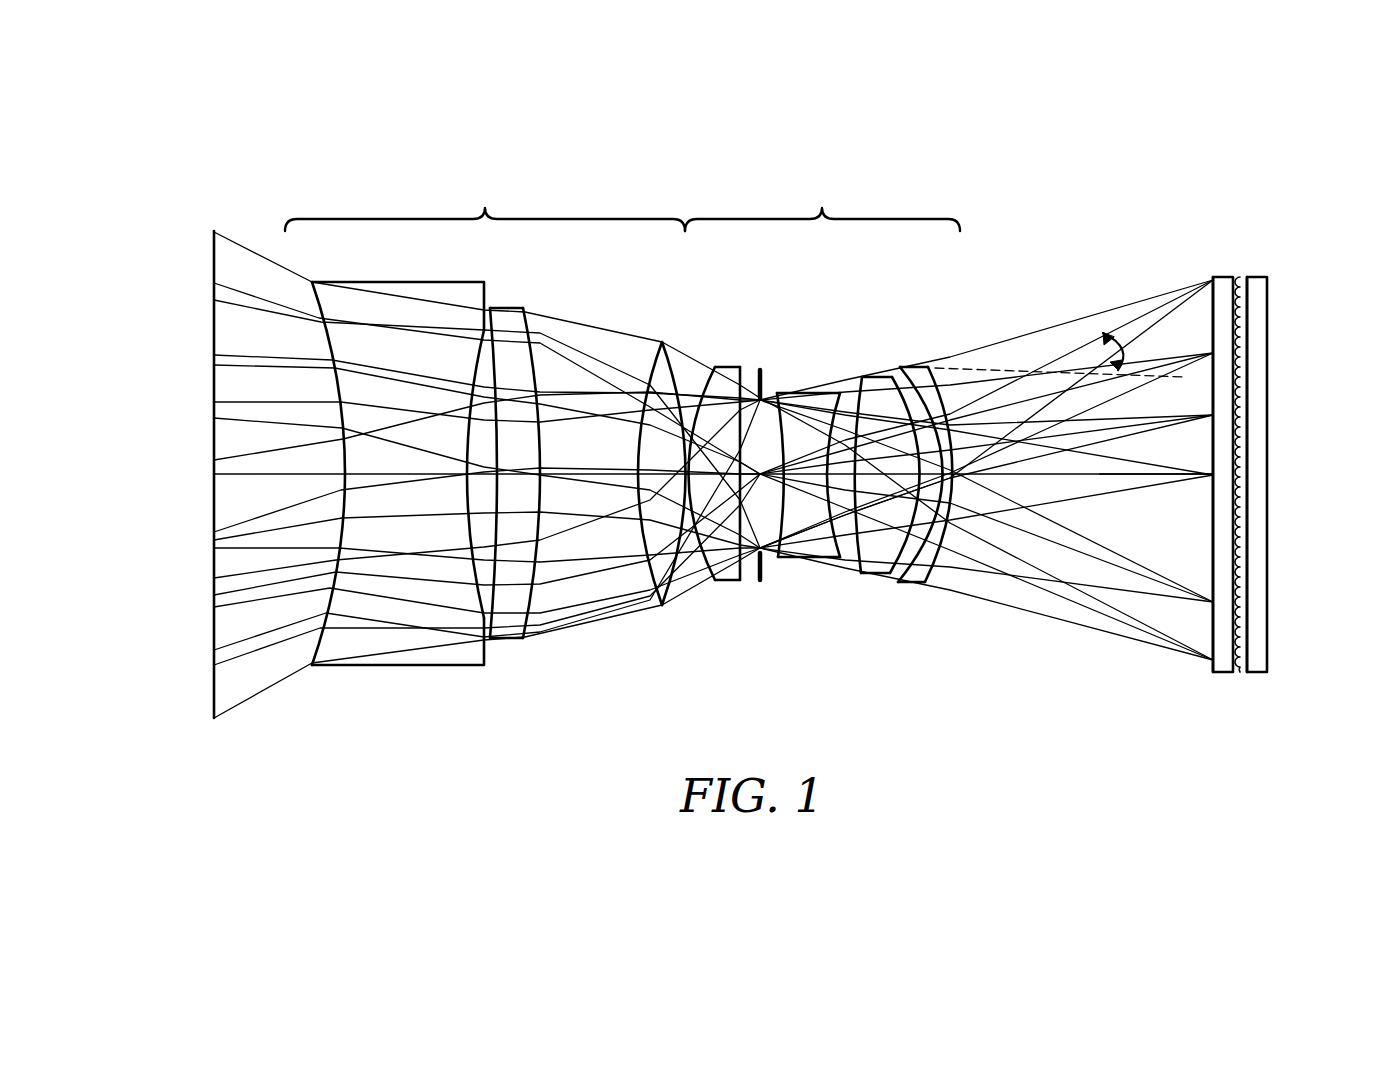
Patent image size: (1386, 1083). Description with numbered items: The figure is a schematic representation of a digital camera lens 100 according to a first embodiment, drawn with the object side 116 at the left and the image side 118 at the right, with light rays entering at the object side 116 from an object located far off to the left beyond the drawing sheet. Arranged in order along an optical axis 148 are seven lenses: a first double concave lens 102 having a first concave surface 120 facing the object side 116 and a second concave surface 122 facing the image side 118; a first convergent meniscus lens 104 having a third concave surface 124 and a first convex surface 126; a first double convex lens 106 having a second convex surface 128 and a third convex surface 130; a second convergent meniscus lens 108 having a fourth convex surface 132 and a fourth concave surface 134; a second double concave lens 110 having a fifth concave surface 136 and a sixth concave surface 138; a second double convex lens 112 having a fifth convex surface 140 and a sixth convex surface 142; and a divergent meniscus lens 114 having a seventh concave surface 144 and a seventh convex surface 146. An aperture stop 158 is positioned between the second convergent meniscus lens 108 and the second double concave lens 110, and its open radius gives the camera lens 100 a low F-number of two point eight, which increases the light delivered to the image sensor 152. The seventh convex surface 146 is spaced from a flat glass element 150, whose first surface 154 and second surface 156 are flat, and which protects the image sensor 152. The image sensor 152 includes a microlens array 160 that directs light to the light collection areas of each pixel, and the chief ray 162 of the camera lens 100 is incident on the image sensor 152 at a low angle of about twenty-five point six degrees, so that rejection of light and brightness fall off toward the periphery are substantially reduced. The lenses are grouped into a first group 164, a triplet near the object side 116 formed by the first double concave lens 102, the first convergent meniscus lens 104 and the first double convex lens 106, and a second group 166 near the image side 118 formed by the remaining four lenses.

The digital camera lens 100 is at (1292, 127).
The first double concave lens 102 is at (399, 483).
The first convergent meniscus lens 104 is at (537, 469).
The first double convex lens 106 is at (643, 478).
The second convergent meniscus lens 108 is at (732, 477).
The second double concave lens 110 is at (809, 456).
The second double convex lens 112 is at (876, 460).
The divergent meniscus lens 114 is at (907, 476).
The object side 116 is at (262, 503).
The image side 118 is at (1060, 503).
The first concave surface 120 is at (310, 662).
The second concave surface 122 is at (483, 612).
The third concave surface 124 is at (462, 615).
The first convex surface 126 is at (525, 620).
The second convex surface 128 is at (638, 567).
The third convex surface 130 is at (665, 582).
The fourth convex surface 132 is at (712, 570).
The fourth concave surface 134 is at (737, 457).
The fifth concave surface 136 is at (763, 475).
The sixth concave surface 138 is at (845, 392).
The fifth convex surface 140 is at (842, 560).
The sixth convex surface 142 is at (893, 567).
The seventh concave surface 144 is at (890, 380).
The seventh convex surface 146 is at (933, 568).
The optical axis 148 is at (1158, 477).
The flat glass element 150 is at (1222, 621).
The image sensor 152 is at (1257, 277).
The first surface 154 is at (1211, 652).
The second surface 156 is at (1247, 658).
The aperture stop 158 is at (767, 383).
The microlens array 160 is at (1255, 319).
The chief ray 162 is at (1043, 370).
The first group 164 is at (485, 207).
The second group 166 is at (822, 207).